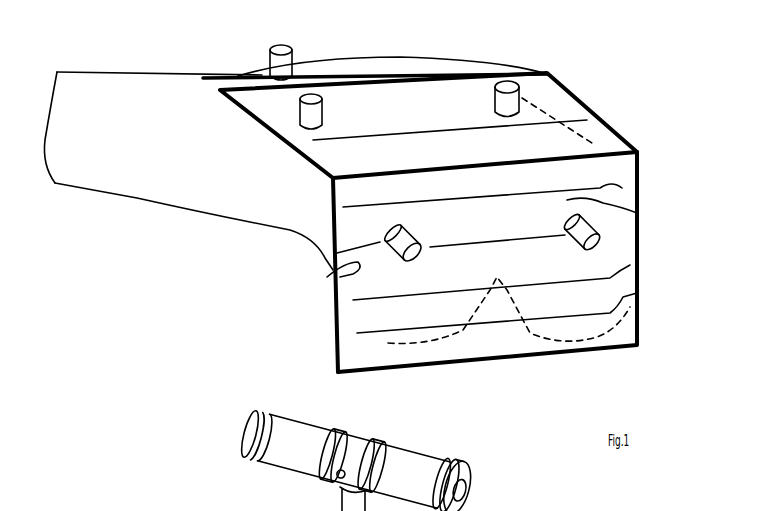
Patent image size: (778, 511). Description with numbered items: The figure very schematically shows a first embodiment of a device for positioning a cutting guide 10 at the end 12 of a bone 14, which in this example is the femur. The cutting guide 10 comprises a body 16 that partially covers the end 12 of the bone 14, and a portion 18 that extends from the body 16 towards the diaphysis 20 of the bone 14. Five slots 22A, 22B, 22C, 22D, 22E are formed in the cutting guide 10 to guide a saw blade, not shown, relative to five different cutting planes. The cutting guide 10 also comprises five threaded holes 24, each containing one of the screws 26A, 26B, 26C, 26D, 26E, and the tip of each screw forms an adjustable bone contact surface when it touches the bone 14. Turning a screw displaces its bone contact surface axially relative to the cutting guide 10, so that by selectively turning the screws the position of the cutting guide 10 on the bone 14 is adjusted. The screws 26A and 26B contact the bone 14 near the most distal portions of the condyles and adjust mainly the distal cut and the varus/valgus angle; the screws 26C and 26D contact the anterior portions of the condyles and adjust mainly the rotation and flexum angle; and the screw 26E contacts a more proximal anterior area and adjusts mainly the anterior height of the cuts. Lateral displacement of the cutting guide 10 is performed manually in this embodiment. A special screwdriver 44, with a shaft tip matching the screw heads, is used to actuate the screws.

The cutting guide 10 is at (605, 114).
The end of the bone 12 is at (347, 315).
The bone 14 is at (134, 200).
The body 16 is at (638, 170).
The portion 18 is at (342, 78).
The diaphysis 20 is at (127, 73).
The slot 22A is at (615, 310).
The slot 22B is at (630, 268).
The slot 22C is at (327, 277).
The slot 22D is at (632, 188).
The slot 22E is at (565, 122).
The threaded hole 24 is at (633, 213).
The screw 26A is at (383, 240).
The screw 26B is at (597, 250).
The screw 26C is at (300, 110).
The screw 26D is at (520, 92).
The screw 26E is at (268, 57).
The screwdriver 44 is at (421, 452).